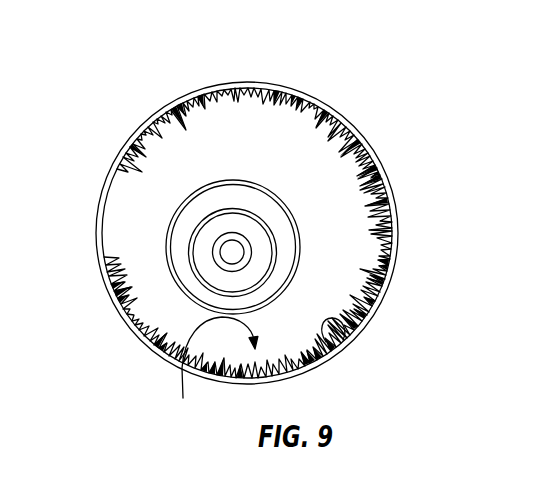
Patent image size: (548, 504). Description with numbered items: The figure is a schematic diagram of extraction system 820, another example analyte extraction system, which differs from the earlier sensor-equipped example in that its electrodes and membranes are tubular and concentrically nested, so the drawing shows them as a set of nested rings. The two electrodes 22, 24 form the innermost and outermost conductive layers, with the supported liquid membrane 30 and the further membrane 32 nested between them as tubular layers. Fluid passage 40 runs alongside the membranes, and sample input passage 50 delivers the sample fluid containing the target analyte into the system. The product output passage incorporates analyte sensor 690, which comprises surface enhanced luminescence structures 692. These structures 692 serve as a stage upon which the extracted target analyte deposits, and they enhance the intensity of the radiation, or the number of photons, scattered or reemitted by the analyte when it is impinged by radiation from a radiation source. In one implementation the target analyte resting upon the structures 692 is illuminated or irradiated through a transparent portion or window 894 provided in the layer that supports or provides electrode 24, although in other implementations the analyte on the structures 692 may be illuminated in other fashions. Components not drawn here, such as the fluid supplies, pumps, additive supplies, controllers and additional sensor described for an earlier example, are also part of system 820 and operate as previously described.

The extraction system 820 is at (43, 134).
The electrode 24 is at (255, 82).
The transparent portion or window 894 is at (97, 213).
The supported liquid membrane 30 is at (302, 237).
The membrane 32 is at (288, 228).
The sample input passage 50 is at (192, 272).
The fluid passage 40 is at (202, 255).
The electrode 22 is at (243, 235).
The analyte sensor 690 is at (209, 373).
The surface enhanced luminescence structures 692 is at (343, 337).